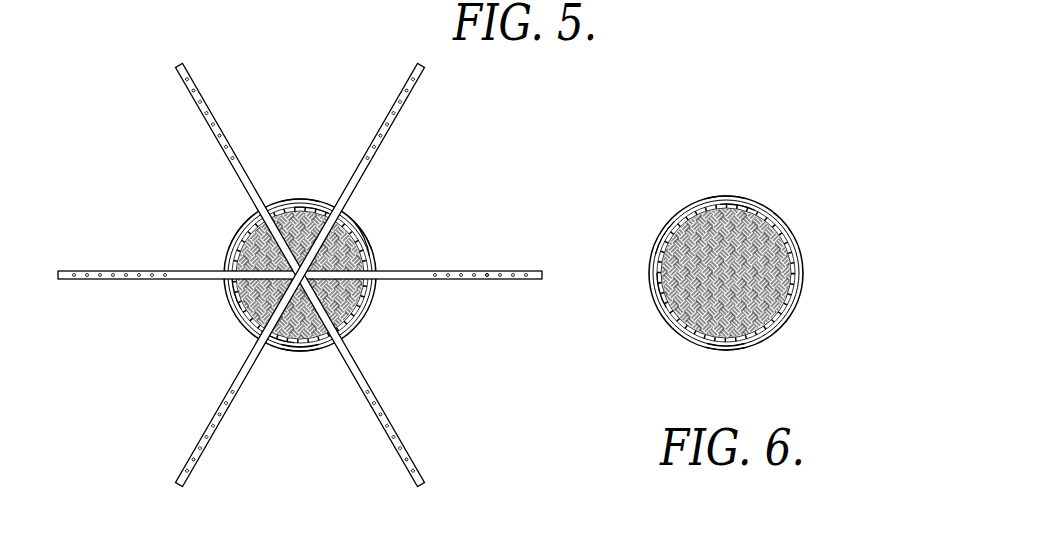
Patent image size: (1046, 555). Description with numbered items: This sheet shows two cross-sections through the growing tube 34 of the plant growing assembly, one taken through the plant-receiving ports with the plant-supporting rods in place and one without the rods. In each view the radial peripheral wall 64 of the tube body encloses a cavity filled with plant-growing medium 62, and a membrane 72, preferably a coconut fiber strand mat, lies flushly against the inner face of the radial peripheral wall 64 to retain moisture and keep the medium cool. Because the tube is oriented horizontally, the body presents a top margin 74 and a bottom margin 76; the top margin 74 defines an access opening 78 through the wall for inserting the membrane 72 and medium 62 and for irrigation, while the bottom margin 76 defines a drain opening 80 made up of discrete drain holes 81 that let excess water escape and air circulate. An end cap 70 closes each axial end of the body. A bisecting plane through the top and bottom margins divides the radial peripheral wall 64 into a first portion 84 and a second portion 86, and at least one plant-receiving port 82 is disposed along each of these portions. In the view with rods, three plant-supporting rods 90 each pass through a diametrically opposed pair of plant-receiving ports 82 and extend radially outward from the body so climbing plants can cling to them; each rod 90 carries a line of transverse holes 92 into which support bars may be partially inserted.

In FIG. 6, the growing tube 34 is at (727, 251).
In FIG. 5, the plant-growing medium 62 is at (352, 312).
In FIG. 6, the plant-growing medium 62 is at (762, 300).
In FIG. 5, the radial peripheral wall 64 is at (234, 246).
In FIG. 6, the radial peripheral wall 64 is at (799, 248).
In FIG. 5, the end cap 70 is at (360, 232).
In FIG. 6, the end cap 70 is at (672, 222).
In FIG. 5, the membrane 72 is at (238, 313).
In FIG. 6, the membrane 72 is at (669, 320).
In FIG. 5, the top margin 74 is at (297, 186).
In FIG. 6, the top margin 74 is at (716, 187).
In FIG. 5, the bottom margin 76 is at (298, 368).
In FIG. 6, the bottom margin 76 is at (706, 360).
In FIG. 5, the access opening 78 is at (310, 207).
In FIG. 6, the access opening 78 is at (735, 205).
In FIG. 5, the drain opening 80 is at (284, 363).
In FIG. 5, the drain hole 81 is at (301, 352).
In FIG. 6, the drain hole 81 is at (722, 346).
In FIG. 5, the plant-receiving port 82 is at (369, 267).
In FIG. 6, the plant-receiving port 82 is at (764, 212).
In FIG. 5, the first portion 84 is at (362, 206).
In FIG. 5, the second portion 86 is at (240, 210).
In FIG. 5, the plant-supporting rod 90 is at (199, 95).
In FIG. 5, the transverse hole 92 is at (487, 281).